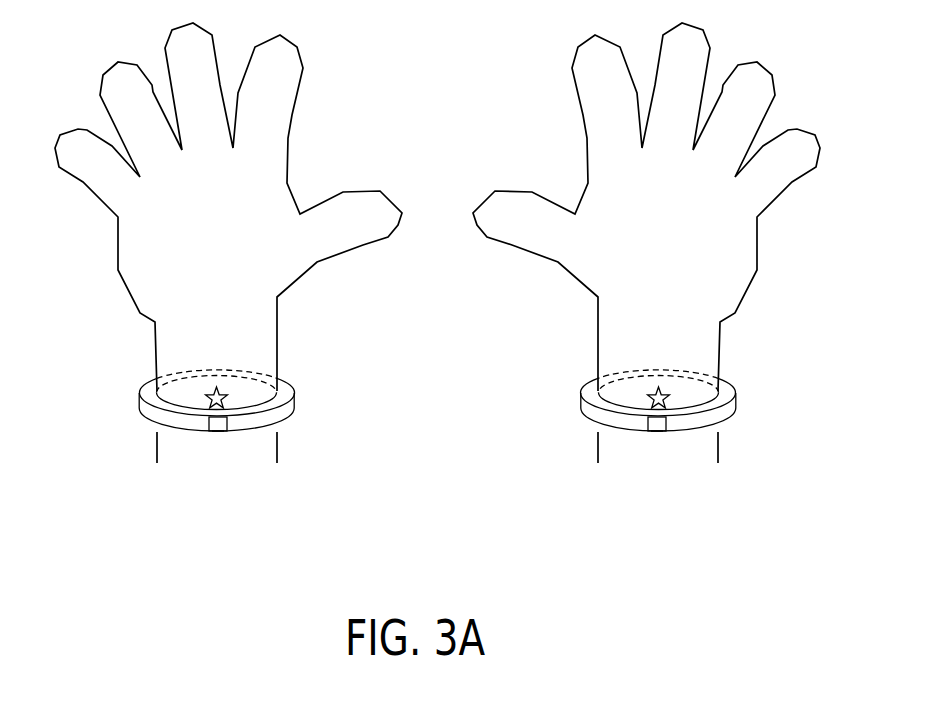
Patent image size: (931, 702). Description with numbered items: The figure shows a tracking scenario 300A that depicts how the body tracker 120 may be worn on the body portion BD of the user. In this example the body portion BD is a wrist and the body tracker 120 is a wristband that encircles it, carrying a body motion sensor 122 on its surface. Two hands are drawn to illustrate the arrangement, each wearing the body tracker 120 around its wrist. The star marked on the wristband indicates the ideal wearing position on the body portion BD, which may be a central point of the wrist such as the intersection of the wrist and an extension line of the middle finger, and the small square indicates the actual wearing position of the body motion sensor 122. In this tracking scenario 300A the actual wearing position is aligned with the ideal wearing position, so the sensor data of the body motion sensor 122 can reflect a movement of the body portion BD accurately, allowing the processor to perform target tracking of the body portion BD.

The body portion BD is at (133, 302).
The body tracker 120 is at (138, 404).
The body motion sensor 122 is at (209, 425).
The tracking scenario 300A is at (825, 575).